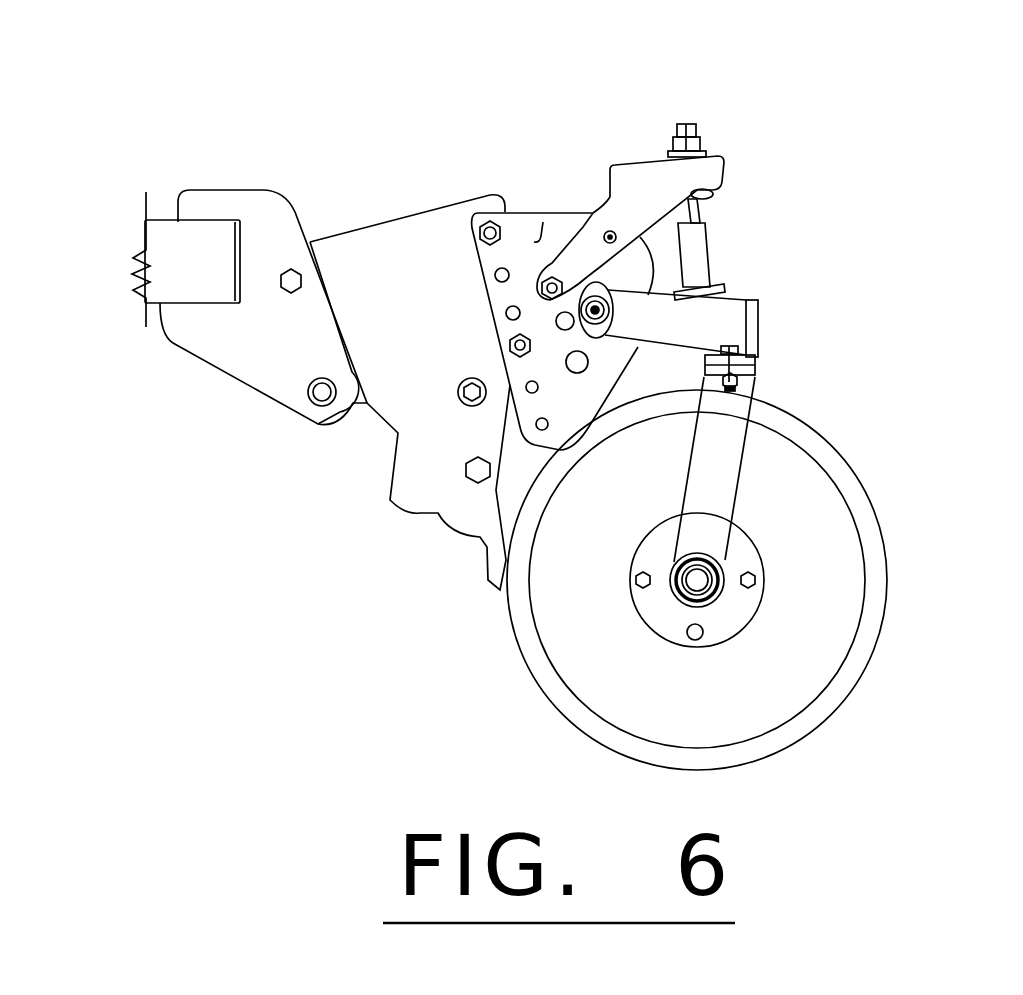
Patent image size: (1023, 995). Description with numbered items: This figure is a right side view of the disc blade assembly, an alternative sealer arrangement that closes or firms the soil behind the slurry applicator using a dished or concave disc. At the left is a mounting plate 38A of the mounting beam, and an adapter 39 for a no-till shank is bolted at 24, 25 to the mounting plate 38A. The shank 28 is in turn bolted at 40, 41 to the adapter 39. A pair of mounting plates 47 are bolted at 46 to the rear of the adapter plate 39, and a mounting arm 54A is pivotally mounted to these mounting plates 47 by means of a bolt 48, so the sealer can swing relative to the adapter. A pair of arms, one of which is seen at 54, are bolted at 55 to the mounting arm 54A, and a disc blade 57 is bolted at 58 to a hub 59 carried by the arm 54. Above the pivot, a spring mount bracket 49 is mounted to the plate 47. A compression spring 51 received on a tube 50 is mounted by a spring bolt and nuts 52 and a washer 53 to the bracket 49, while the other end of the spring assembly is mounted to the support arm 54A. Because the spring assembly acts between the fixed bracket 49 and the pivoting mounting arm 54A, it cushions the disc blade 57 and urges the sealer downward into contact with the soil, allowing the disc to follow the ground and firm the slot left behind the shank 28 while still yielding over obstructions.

The bolt 24 is at (310, 393).
The bolt 25 is at (291, 258).
The shank 28 is at (356, 487).
The mounting plate 38A is at (244, 347).
The adapter 39 is at (411, 212).
The bolt 40 is at (462, 397).
The bolt 41 is at (465, 475).
The bolt 46 is at (500, 222).
The mounting plate 47 is at (542, 230).
The bolt 48 is at (594, 292).
The spring mount bracket 49 is at (640, 162).
The tube 50 is at (712, 238).
The compression spring 51 is at (724, 286).
The spring bolt and nuts 52 is at (702, 125).
The washer 53 is at (712, 150).
The arm 54 is at (752, 453).
The mounting arm 54A is at (760, 332).
The bolt 55 is at (794, 327).
The disc blade 57 is at (890, 560).
The bolt 58 is at (705, 632).
The hub 59 is at (673, 596).